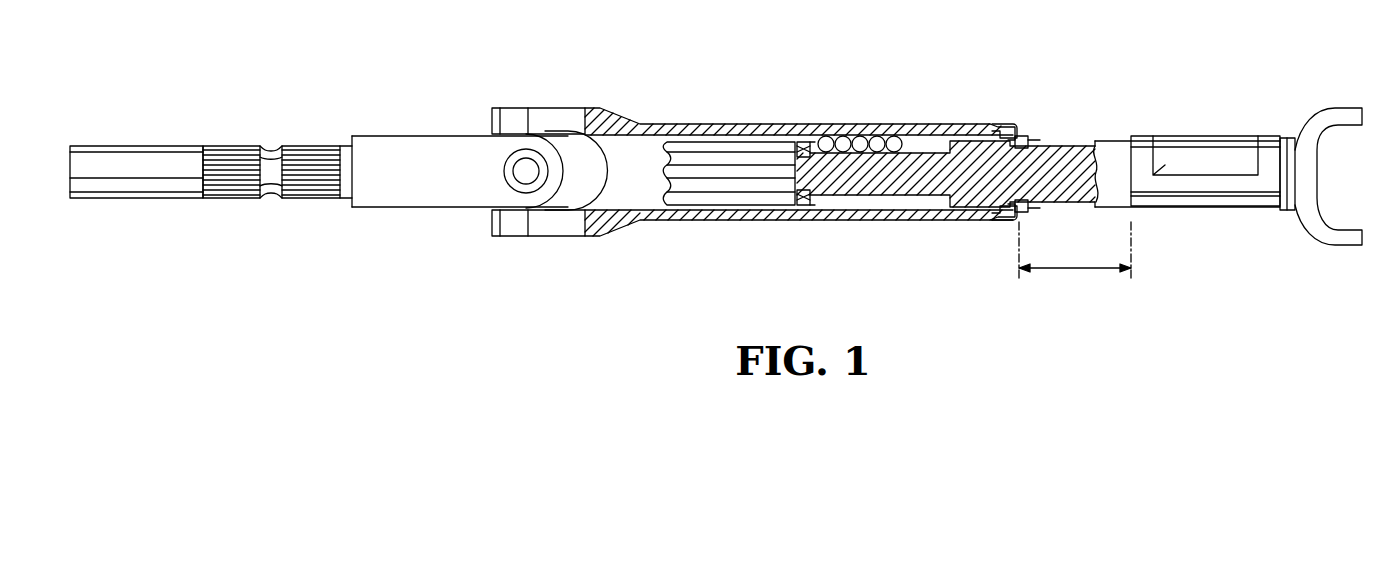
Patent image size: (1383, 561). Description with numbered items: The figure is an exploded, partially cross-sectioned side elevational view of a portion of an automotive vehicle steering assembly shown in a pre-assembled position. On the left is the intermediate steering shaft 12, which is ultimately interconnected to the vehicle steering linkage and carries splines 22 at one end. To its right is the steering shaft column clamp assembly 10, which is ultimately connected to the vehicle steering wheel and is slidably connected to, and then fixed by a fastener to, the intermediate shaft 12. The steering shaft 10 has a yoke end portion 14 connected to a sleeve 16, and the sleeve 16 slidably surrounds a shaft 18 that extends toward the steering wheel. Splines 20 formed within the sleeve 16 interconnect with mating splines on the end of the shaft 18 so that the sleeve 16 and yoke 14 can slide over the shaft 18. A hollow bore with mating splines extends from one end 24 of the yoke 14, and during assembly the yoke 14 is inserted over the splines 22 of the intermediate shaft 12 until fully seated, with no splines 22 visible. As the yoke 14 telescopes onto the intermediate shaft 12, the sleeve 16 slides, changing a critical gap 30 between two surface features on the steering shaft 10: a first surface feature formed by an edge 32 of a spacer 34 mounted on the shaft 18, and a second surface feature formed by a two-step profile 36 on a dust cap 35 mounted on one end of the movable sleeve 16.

The steering shaft column clamp assembly 10 is at (900, 116).
The intermediate steering shaft 12 is at (153, 143).
The yoke end portion 14 is at (441, 134).
The sleeve 16 is at (730, 124).
The shaft 18 is at (1077, 143).
The splines 20 is at (745, 185).
The splines 22 is at (303, 152).
The end of the yoke 24 is at (352, 204).
The critical gap 30 is at (1072, 269).
The edge of the spacer 32 is at (1120, 140).
The spacer 34 is at (1265, 137).
The dust cap 35 is at (1005, 126).
The two-step profile 36 is at (1023, 143).